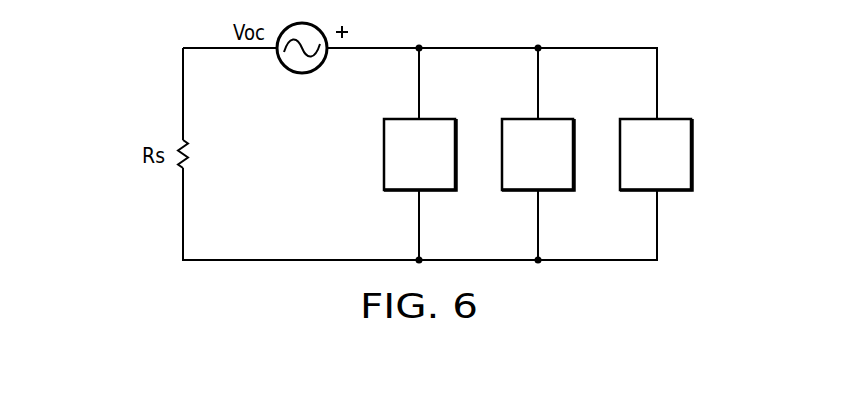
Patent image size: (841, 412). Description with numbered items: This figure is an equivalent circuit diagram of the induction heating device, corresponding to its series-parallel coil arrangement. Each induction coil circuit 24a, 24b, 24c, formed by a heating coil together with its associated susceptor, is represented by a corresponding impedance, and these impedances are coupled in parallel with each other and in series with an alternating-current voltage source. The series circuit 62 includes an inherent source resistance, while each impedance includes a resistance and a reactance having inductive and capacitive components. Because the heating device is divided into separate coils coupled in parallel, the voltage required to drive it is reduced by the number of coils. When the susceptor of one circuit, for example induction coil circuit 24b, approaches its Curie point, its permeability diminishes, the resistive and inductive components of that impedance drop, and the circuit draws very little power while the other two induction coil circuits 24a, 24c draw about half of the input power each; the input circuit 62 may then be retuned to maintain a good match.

The series circuit 62 is at (135, 97).
The induction coil circuit 24a is at (442, 118).
The induction coil circuit 24b is at (562, 118).
The induction coil circuit 24c is at (680, 118).